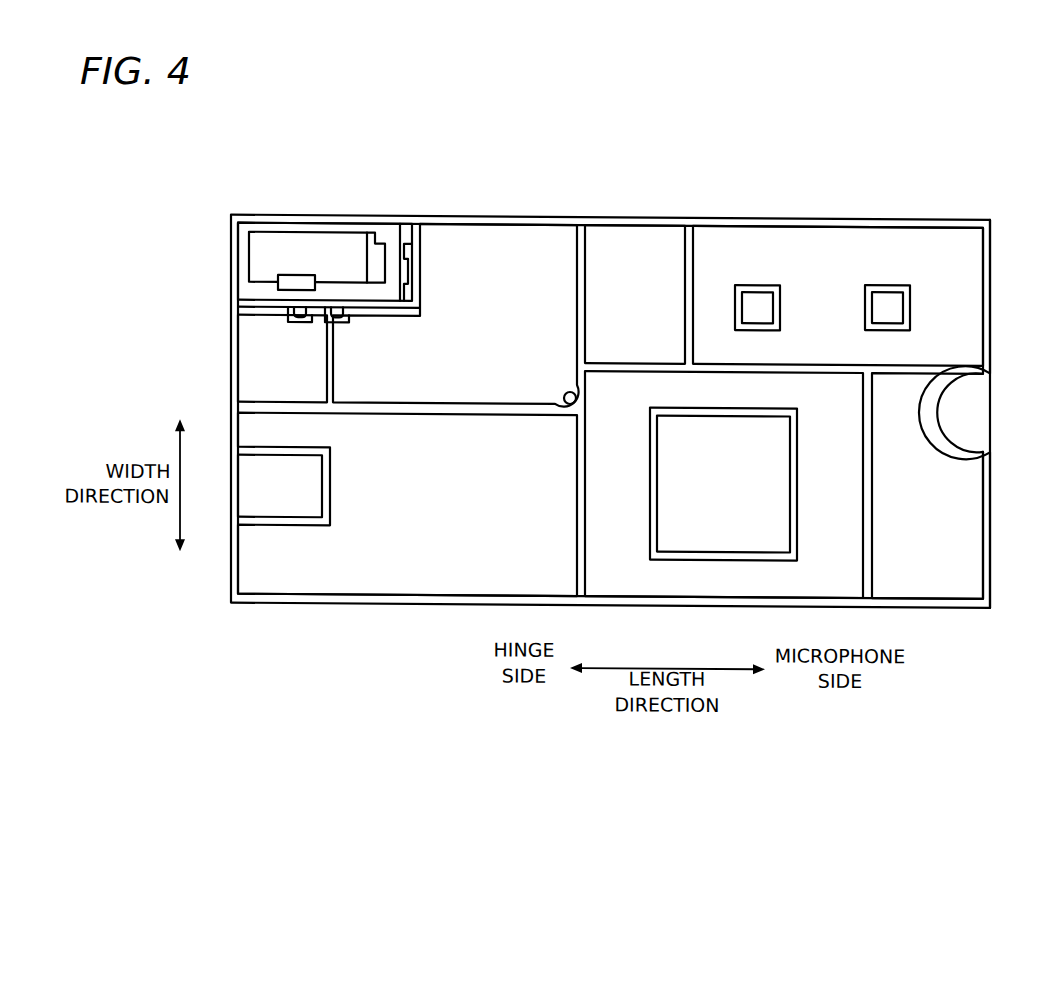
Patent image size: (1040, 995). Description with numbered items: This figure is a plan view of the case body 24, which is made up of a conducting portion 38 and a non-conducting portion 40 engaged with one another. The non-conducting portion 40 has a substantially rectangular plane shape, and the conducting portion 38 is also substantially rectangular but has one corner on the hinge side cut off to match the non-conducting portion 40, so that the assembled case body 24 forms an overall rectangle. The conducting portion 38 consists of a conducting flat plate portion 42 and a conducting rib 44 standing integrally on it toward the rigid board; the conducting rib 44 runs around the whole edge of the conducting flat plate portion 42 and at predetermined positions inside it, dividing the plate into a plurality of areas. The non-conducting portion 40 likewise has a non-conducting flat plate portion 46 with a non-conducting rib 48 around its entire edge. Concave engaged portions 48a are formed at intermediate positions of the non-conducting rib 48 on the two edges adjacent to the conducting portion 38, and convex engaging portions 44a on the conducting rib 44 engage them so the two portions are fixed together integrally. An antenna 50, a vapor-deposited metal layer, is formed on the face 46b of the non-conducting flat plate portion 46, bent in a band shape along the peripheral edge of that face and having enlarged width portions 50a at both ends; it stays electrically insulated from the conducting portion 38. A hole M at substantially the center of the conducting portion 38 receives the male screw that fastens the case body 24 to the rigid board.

The case body 24 is at (834, 188).
The conducting portion 38 is at (668, 212).
The non-conducting portion 40 is at (372, 214).
The conducting flat plate portion 42 is at (447, 547).
The conducting rib 44 is at (533, 212).
The engaging portion 44a is at (318, 298).
The non-conducting flat plate portion 46 is at (308, 200).
The face of non-conducting flat plate portion 46b is at (318, 242).
The non-conducting rib 48 is at (237, 262).
The engaged portion 48a is at (406, 264).
The antenna 50 is at (266, 229).
The enlarged width portion 50a is at (387, 250).
The hole M is at (580, 396).